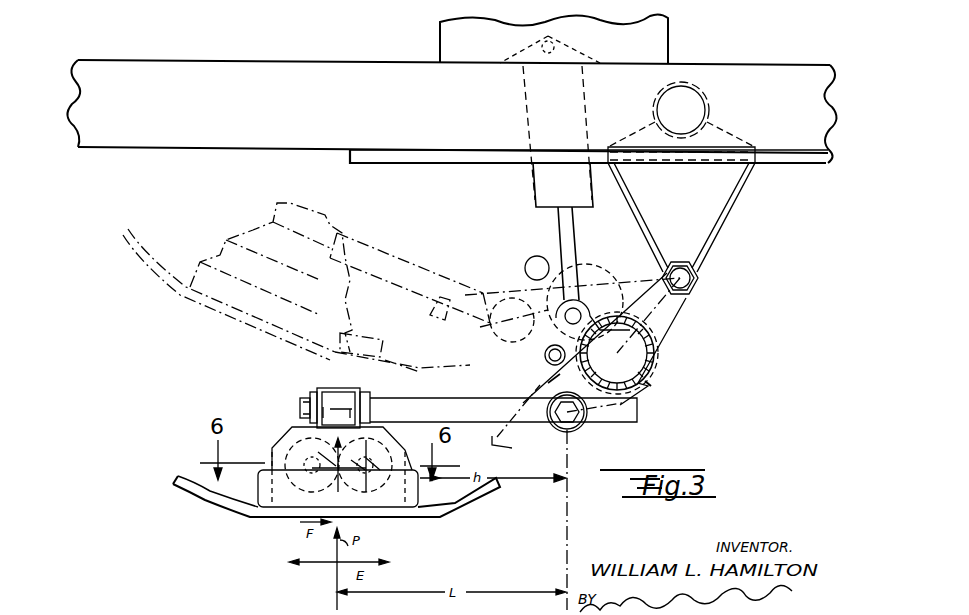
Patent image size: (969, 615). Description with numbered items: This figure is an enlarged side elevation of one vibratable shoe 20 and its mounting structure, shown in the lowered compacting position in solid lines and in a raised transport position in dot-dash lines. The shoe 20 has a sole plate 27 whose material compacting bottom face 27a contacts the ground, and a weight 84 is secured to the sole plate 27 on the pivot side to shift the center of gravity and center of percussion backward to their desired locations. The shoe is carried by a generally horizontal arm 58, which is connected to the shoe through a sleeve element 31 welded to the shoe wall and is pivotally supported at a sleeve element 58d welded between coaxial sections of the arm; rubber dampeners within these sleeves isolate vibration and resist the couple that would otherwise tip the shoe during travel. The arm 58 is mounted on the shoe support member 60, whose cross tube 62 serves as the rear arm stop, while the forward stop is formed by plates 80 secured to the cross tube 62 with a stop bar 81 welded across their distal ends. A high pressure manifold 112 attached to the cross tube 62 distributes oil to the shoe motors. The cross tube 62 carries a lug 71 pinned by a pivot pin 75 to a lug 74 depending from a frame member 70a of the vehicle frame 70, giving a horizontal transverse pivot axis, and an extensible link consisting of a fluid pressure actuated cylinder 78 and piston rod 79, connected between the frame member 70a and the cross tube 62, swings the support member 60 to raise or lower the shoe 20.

The vehicle frame 70 is at (341, 61).
The frame member 70a is at (729, 110).
The fluid pressure actuated cylinder 78 is at (550, 121).
The piston rod 79 is at (565, 223).
The lug 74 is at (735, 188).
The pivot pin 75 is at (688, 278).
The lug 71 is at (673, 327).
The cross tube 62 is at (657, 356).
The shoe support member 60 is at (652, 387).
The high pressure manifold 112 is at (545, 356).
The plate 80 is at (547, 384).
The stop bar 81 is at (512, 443).
The arm 58 is at (448, 398).
The sleeve element 58d is at (583, 421).
The sleeve element 31 is at (339, 388).
The vibratable shoe 20 is at (293, 441).
The sole plate 27 is at (412, 512).
The material compacting bottom face 27a is at (378, 513).
The weight 84 is at (462, 502).